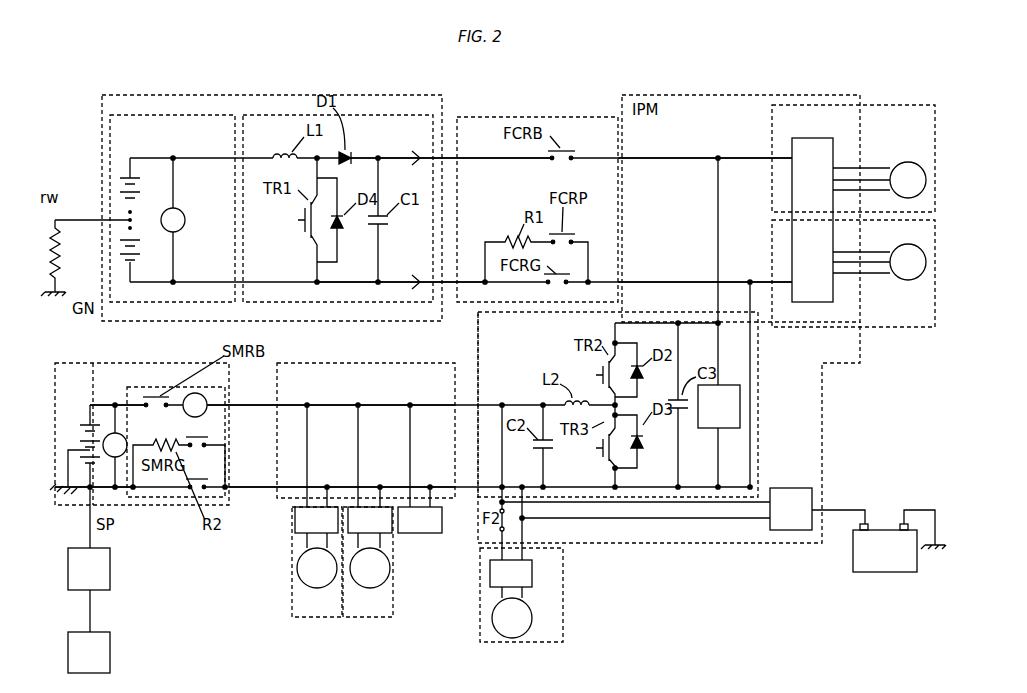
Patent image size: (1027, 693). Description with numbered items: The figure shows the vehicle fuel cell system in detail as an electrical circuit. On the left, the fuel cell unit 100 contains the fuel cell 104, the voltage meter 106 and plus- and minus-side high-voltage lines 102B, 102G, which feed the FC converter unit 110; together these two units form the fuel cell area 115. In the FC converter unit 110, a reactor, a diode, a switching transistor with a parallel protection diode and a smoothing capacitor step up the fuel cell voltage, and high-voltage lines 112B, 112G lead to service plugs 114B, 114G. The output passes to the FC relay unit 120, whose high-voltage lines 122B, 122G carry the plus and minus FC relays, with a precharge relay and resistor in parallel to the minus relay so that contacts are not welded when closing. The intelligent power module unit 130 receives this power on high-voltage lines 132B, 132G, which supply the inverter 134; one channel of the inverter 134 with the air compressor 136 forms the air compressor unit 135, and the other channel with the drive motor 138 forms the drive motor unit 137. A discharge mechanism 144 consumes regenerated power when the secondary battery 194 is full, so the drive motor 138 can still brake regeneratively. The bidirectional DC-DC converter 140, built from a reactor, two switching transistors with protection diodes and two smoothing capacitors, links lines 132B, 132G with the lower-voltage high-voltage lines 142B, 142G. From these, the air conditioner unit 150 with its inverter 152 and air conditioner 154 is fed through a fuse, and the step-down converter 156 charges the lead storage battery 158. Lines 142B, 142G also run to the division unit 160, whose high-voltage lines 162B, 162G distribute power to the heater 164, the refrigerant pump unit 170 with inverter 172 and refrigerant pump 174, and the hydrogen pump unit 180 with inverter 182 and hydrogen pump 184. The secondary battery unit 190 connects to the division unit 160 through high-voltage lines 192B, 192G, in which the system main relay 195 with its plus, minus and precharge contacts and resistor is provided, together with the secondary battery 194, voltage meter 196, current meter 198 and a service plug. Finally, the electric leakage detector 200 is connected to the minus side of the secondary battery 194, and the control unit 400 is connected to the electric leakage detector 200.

The fuel cell unit 100 is at (187, 115).
The high-voltage line 102B is at (174, 156).
The high-voltage line 102G is at (178, 283).
The fuel cell 104 is at (121, 180).
The voltage meter 106 is at (180, 210).
The FC converter unit 110 is at (257, 115).
The high-voltage line 112B is at (367, 152).
The high-voltage line 112G is at (317, 286).
The service plug 114B is at (418, 148).
The service plug 114G is at (418, 287).
The fuel cell area 115 is at (437, 94).
The FC relay unit 120 is at (571, 117).
The high-voltage line 122B is at (478, 162).
The high-voltage line 122G is at (472, 278).
The intelligent power module unit 130 is at (822, 405).
The high-voltage line 132B is at (658, 162).
The high-voltage line 132G is at (658, 280).
The inverter 134 is at (792, 150).
The air compressor unit 135 is at (770, 122).
The air compressor 136 is at (894, 165).
The drive motor unit 137 is at (893, 328).
The drive motor 138 is at (894, 247).
The DC-DC converter 140 is at (662, 320).
The high-voltage line 142B is at (494, 404).
The high-voltage line 142G is at (548, 487).
The discharge mechanism 144 is at (742, 385).
The air conditioner unit 150 is at (563, 589).
The inverter 152 is at (532, 573).
The air conditioner 154 is at (532, 616).
The step-down converter 156 is at (790, 488).
The lead storage battery 158 is at (888, 524).
The division unit 160 is at (355, 363).
The high-voltage line 162B is at (365, 404).
The high-voltage line 162G is at (365, 487).
The heater 164 is at (420, 535).
The refrigerant pump unit 170 is at (394, 574).
The inverter 172 is at (391, 536).
The refrigerant pump 174 is at (386, 586).
The hydrogen pump unit 180 is at (292, 580).
The inverter 182 is at (295, 522).
The hydrogen pump 184 is at (304, 586).
The secondary battery unit 190 is at (165, 387).
The high-voltage line 192B is at (120, 403).
The high-voltage line 192G is at (125, 492).
The secondary battery 194 is at (90, 362).
The system main relay 195 is at (222, 421).
The voltage meter 196 is at (115, 432).
The current meter 198 is at (195, 393).
The electric leakage detector 200 is at (110, 570).
The control unit 400 is at (100, 632).